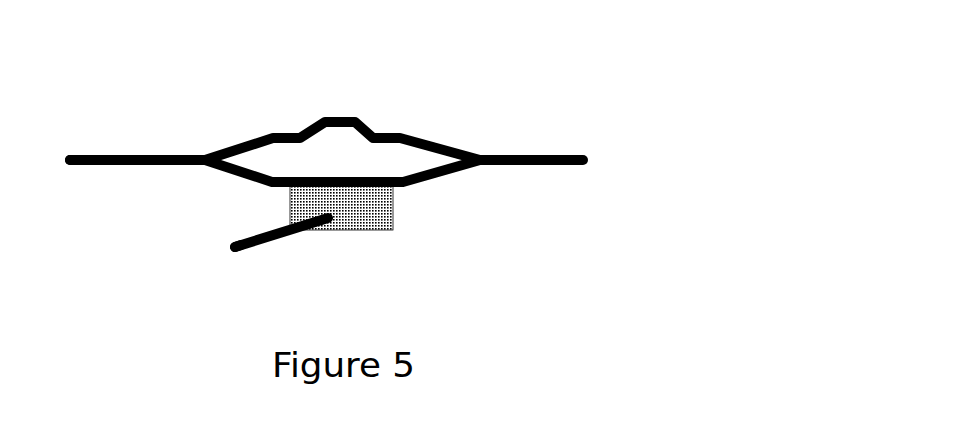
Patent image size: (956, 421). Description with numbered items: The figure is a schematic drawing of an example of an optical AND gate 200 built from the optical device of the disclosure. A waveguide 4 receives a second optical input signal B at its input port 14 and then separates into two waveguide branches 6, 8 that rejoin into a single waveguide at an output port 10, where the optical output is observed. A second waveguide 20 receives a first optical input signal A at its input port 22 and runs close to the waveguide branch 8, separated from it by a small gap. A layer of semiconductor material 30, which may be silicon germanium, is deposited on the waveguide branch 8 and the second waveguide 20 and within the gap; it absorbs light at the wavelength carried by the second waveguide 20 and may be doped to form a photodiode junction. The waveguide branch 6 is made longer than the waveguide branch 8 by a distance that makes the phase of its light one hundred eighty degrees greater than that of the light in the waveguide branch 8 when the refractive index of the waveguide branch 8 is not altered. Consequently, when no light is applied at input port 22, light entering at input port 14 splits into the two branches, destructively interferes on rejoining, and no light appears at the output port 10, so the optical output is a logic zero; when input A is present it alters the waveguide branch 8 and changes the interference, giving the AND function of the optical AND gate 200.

The optical AND gate 200 is at (585, 83).
The waveguide 4 is at (123, 155).
The input port 14 is at (68, 166).
The waveguide branch 6 is at (365, 120).
The waveguide branch 8 is at (427, 184).
The output port 10 is at (507, 167).
The second waveguide 20 is at (258, 246).
The input port 22 is at (230, 251).
The semiconductor material 30 is at (367, 208).